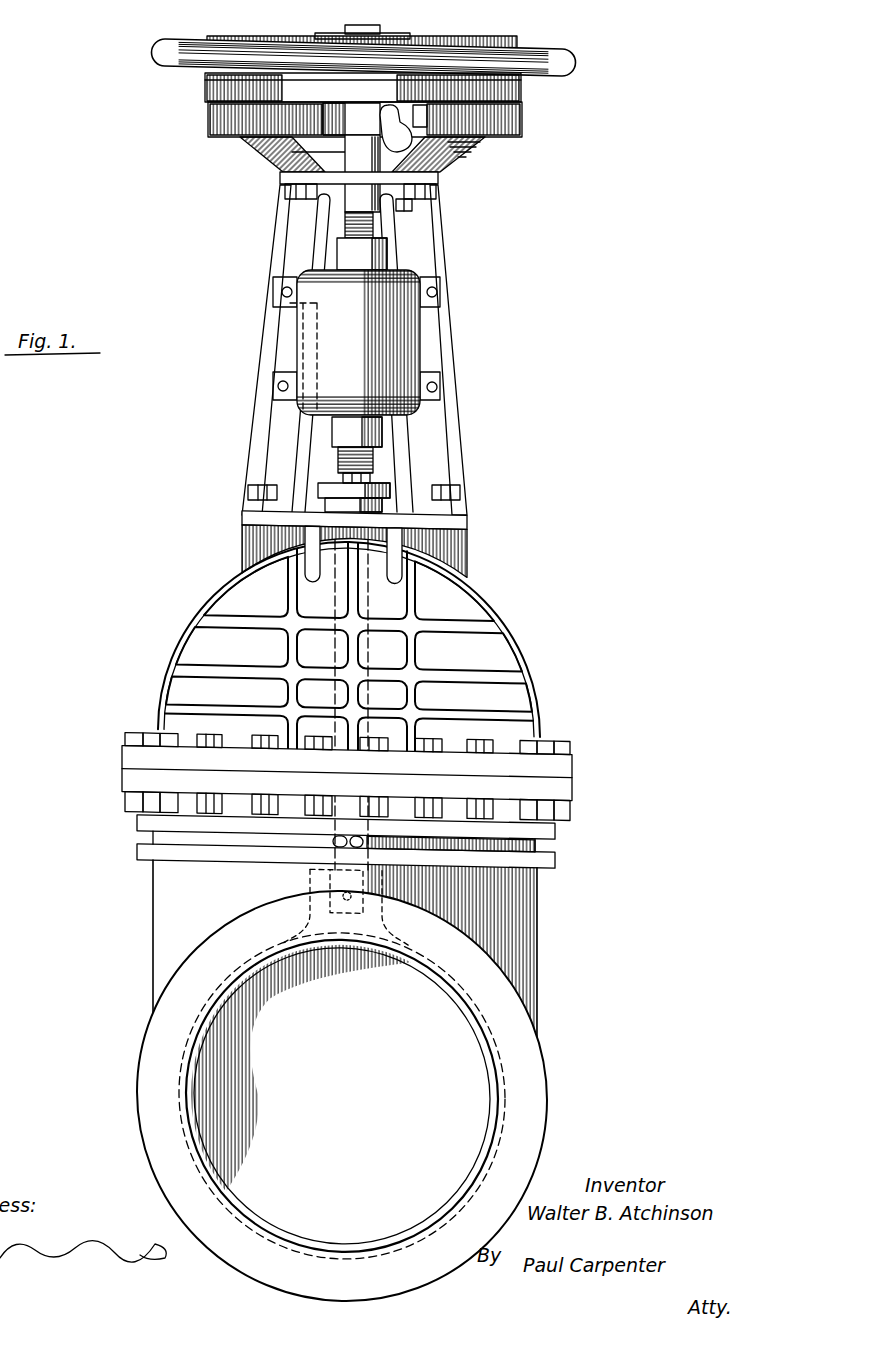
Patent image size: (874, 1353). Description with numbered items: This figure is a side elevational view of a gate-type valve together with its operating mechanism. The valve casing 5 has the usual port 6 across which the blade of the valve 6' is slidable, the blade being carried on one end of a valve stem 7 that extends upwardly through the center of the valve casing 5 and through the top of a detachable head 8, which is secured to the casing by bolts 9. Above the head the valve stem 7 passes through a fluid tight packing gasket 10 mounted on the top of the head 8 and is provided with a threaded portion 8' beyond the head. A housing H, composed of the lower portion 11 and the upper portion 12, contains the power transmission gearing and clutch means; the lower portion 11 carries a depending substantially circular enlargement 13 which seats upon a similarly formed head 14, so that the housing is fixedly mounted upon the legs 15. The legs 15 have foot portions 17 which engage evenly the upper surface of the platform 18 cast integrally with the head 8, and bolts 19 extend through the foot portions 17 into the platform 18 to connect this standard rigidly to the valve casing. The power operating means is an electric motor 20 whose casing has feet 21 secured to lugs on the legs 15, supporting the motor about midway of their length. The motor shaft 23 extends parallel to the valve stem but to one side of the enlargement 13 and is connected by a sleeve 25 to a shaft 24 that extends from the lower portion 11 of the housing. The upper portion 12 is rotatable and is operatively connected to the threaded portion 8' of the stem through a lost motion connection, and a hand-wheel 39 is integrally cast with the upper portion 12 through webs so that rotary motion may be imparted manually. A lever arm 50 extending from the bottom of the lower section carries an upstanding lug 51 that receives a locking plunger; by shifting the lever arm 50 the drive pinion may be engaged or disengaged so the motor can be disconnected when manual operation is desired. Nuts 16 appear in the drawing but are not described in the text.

The hand-wheel 39 is at (165, 56).
The upper portion of housing 12 is at (470, 70).
The housing H is at (521, 80).
The lower portion of housing 11 is at (520, 125).
The upstanding lug 51 is at (386, 125).
The shaft 24 is at (350, 145).
The head 14 is at (282, 177).
The nuts 16 is at (295, 192).
The circular enlargement 13 is at (458, 160).
The lever arm 50 is at (405, 207).
The legs 15 is at (286, 230).
The sleeve 25 is at (352, 232).
The motor shaft 23 is at (357, 222).
The electric motor 20 is at (407, 345).
The feet 21 is at (440, 392).
The threaded portion 8' is at (413, 446).
The packing gasket 10 is at (382, 505).
The bolts 19 is at (262, 488).
The foot portions 17 is at (467, 516).
The platform 18 is at (455, 548).
The detachable head 8 is at (349, 630).
The valve stem 7 is at (370, 657).
The bolts 9 is at (558, 746).
The valve casing 5 is at (537, 947).
The port 6 is at (384, 1096).
The blade of the valve 6' is at (301, 1068).